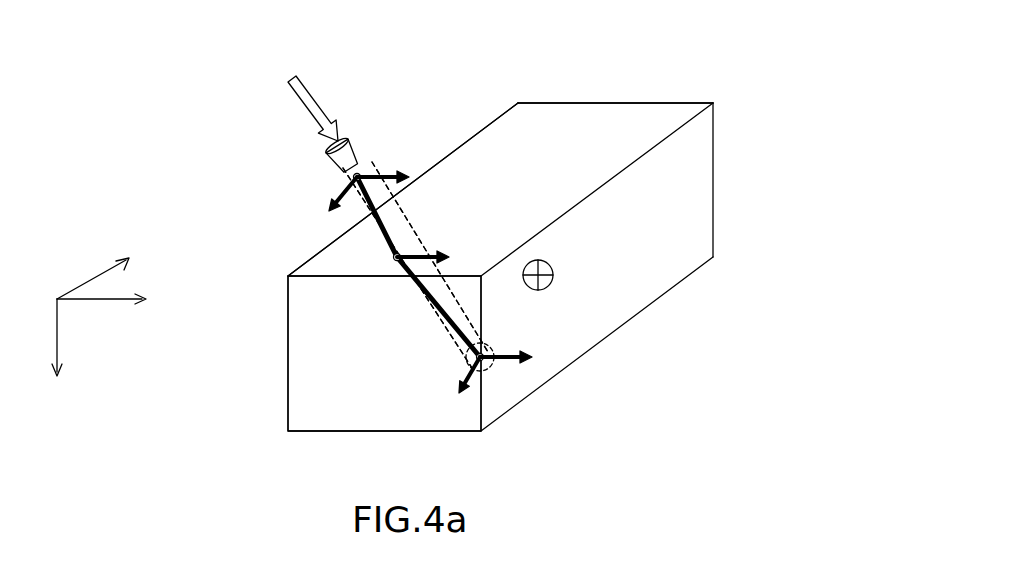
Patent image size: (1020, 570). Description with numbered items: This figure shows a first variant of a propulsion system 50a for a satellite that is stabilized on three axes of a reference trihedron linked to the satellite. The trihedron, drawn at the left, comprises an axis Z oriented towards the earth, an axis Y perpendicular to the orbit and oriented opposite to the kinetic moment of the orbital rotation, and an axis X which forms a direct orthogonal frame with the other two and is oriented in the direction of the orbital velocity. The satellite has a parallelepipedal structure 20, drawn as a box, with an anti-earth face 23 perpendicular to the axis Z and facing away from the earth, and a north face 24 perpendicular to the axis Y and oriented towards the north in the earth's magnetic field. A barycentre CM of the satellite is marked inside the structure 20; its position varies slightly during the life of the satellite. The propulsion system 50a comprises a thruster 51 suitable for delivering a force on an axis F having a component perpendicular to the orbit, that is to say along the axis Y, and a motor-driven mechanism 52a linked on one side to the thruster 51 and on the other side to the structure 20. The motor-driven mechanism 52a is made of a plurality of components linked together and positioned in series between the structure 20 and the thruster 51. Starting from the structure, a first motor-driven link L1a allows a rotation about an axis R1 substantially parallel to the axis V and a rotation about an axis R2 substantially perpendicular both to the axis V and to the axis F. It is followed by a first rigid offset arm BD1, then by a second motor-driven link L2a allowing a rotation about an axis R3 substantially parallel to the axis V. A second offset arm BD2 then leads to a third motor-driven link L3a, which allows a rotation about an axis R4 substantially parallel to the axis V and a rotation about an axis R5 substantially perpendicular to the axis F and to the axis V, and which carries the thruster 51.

The thrust axis F is at (297, 82).
The thruster 51 is at (360, 134).
The propulsion system 50a is at (425, 76).
The north face 24 is at (622, 123).
The parallelepipedal structure 20 is at (657, 299).
The anti-earth face 23 is at (437, 412).
The barycentre CM is at (556, 280).
The motor-driven mechanism 52a is at (395, 283).
The first rigid offset arm BD1 is at (428, 312).
The second offset arm BD2 is at (363, 241).
The third motor-driven link L3a is at (363, 166).
The second motor-driven link L2a is at (403, 250).
The first motor-driven link L1a is at (488, 344).
The first rotation axis R1 is at (520, 364).
The second rotation axis R2 is at (458, 390).
The third rotation axis R3 is at (449, 258).
The fourth rotation axis R4 is at (393, 172).
The fifth rotation axis R5 is at (340, 192).
The axis X is at (115, 301).
The axis Y is at (56, 354).
The axis Z is at (105, 268).